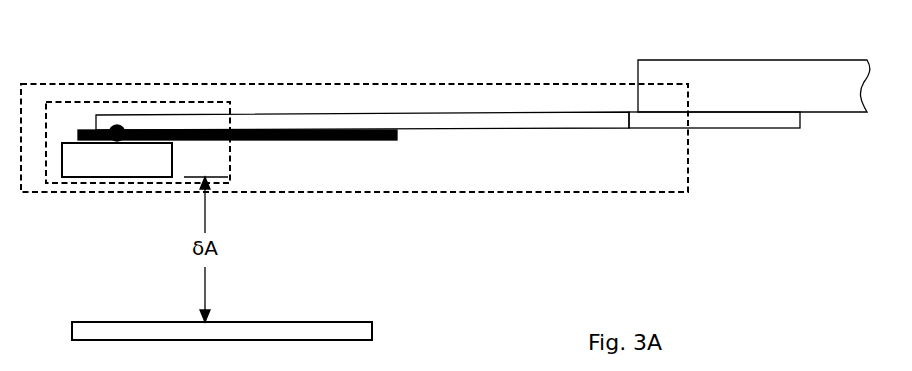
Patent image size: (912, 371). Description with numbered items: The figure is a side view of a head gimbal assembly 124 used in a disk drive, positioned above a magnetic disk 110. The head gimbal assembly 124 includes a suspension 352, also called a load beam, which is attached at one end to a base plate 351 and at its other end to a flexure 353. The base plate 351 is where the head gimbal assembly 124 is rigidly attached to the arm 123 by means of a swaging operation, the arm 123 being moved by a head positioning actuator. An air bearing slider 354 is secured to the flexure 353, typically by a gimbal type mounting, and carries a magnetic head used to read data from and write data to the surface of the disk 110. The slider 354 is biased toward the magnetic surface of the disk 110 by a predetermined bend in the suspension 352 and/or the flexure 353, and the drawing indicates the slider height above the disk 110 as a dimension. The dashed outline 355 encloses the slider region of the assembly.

The magnetic disk 110 is at (275, 322).
The arm 123 is at (737, 60).
The head gimbal assembly 124 is at (513, 84).
The base plate 351 is at (732, 128).
The suspension 352 is at (370, 112).
The flexure 353 is at (280, 137).
The air bearing slider 354 is at (118, 177).
The tip assembly 355 is at (137, 102).